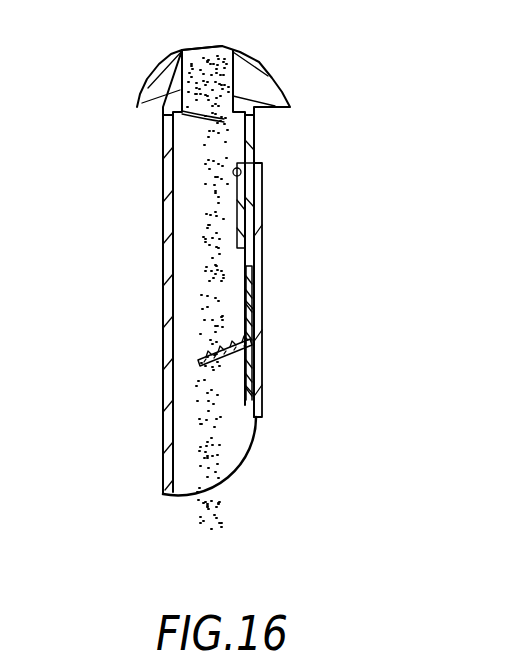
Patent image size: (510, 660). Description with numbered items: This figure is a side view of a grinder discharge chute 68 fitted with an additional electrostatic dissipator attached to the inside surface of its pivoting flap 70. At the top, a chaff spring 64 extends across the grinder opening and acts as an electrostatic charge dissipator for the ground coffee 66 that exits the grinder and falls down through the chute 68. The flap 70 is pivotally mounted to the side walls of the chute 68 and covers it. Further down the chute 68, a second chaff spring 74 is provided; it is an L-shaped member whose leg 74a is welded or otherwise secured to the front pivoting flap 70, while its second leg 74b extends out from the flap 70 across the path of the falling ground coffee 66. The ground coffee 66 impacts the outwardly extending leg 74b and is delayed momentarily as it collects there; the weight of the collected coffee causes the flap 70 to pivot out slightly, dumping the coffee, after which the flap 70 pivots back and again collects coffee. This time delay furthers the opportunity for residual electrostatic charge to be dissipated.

The chaff spring 64 is at (208, 102).
The ground coffee 66 is at (205, 320).
The chute 68 is at (310, 149).
The pivoting flap 70 is at (260, 207).
The chaff spring 74 is at (250, 324).
The leg 74a is at (248, 300).
The second leg 74b is at (248, 362).